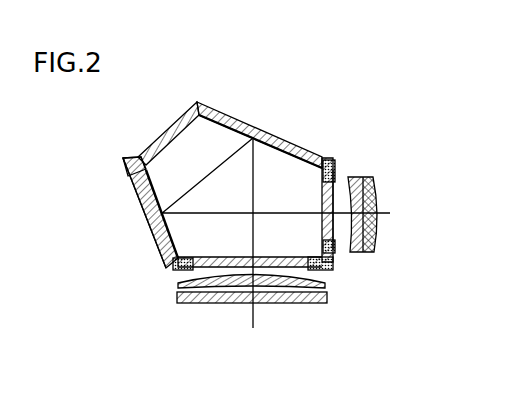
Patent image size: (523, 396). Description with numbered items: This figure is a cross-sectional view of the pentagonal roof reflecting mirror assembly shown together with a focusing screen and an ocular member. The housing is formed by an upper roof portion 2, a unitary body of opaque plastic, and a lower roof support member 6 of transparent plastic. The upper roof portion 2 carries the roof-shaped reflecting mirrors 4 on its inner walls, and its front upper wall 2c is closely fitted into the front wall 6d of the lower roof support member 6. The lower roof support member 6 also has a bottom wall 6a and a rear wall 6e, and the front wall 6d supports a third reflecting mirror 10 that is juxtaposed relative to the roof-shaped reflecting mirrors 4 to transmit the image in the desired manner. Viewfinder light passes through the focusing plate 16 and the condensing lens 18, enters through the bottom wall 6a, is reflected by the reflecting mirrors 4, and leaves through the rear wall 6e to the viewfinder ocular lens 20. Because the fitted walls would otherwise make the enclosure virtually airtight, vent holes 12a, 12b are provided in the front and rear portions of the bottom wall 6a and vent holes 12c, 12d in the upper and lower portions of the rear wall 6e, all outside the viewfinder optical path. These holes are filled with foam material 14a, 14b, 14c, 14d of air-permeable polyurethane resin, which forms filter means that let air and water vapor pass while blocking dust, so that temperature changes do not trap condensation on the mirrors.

The upper roof portion 2 is at (177, 111).
The front upper wall 2c is at (153, 143).
The roof-shaped reflecting mirrors 4 is at (291, 154).
The lower roof support member 6 is at (130, 190).
The bottom wall 6a is at (178, 284).
The front wall 6d is at (155, 225).
The rear wall 6e is at (337, 243).
The third reflecting mirror 10 is at (155, 192).
The vent hole 12a is at (174, 268).
The vent hole 12b is at (331, 270).
The vent hole 12c is at (331, 158).
The vent hole 12d is at (338, 260).
The foam material 14a is at (185, 259).
The foam material 14b is at (317, 257).
The foam material 14c is at (322, 172).
The foam material 14d is at (322, 247).
The focusing plate 16 is at (264, 238).
The condensing lens 18 is at (254, 315).
The viewfinder ocular lens 20 is at (378, 186).